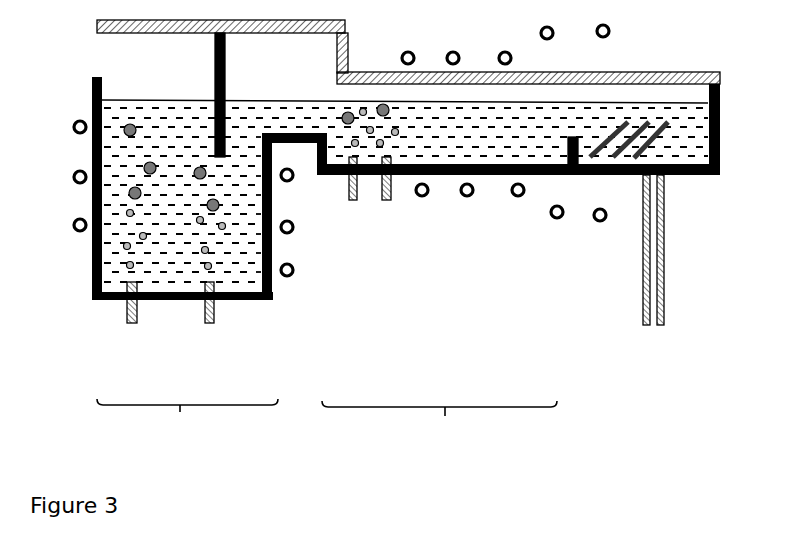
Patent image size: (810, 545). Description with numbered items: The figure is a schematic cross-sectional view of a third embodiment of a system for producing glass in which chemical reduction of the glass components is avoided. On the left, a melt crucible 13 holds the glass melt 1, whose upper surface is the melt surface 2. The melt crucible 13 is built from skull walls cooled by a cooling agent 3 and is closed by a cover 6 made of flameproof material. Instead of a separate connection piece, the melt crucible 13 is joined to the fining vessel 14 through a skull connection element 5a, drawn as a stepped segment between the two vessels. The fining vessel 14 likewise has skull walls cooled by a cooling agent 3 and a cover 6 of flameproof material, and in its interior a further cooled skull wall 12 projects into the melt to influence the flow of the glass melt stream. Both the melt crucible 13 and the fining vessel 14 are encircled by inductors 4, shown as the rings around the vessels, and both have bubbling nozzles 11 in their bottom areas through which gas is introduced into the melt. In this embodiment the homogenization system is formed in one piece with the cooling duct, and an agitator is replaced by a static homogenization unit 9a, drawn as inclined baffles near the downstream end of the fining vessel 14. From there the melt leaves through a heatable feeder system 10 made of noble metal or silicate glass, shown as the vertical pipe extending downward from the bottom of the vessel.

The glass melt 1 is at (465, 143).
The melt surface 2 is at (251, 99).
The skull walls cooled by cooling agent 3 is at (100, 298).
The inductor 4 is at (461, 196).
The skull connection element 5a is at (292, 143).
The cover made of flameproof material 6 is at (195, 30).
The static homogenization unit 9a is at (653, 140).
The heatable feeder system 10 is at (647, 302).
The bubbling nozzles 11 is at (137, 300).
The skull wall influencing the glass melt flow 12 is at (565, 173).
The melt crucible 13 is at (187, 425).
The fining vessel 14 is at (439, 426).